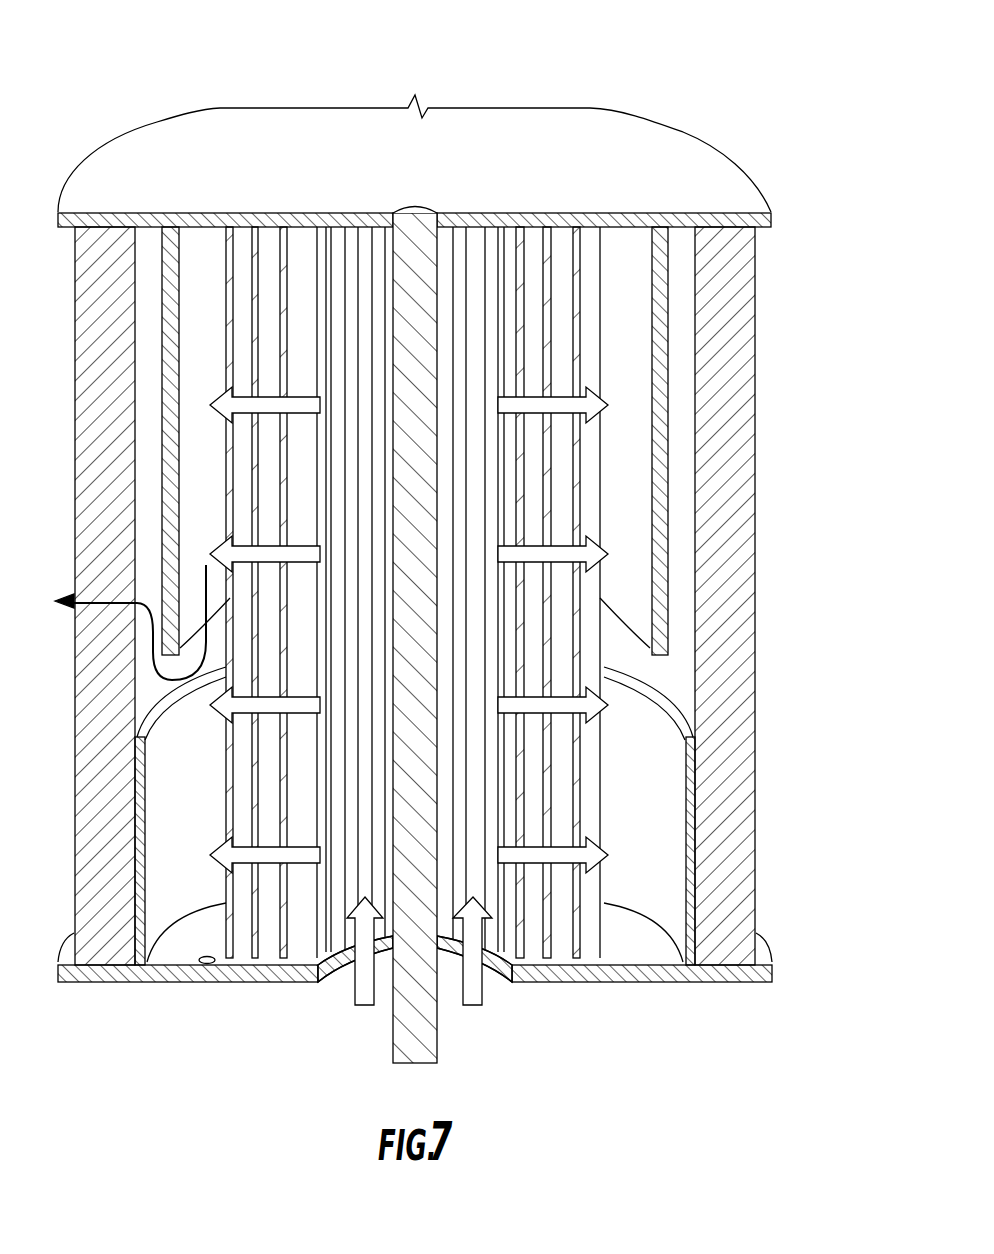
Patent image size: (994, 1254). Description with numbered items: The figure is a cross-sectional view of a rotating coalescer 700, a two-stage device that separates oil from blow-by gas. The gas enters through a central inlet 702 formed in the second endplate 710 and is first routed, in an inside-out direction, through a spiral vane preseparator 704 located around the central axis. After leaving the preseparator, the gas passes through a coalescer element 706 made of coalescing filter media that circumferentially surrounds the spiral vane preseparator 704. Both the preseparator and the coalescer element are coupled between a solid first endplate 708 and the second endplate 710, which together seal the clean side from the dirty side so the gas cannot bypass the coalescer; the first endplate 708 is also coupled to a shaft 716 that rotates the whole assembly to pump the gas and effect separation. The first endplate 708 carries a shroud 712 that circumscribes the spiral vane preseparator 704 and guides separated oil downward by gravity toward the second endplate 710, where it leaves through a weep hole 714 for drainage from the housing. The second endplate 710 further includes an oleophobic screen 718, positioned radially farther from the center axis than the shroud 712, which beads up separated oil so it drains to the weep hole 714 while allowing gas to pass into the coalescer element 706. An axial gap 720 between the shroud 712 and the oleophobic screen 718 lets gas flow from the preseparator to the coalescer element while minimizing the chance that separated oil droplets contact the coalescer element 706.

The rotating coalescer 700 is at (133, 53).
The central inlet 702 is at (477, 988).
The spiral vane preseparator 704 is at (593, 305).
The coalescer element 706 is at (415, 596).
The first endplate 708 is at (648, 155).
The second endplate 710 is at (635, 960).
The shroud 712 is at (638, 370).
The weep hole 714 is at (216, 963).
The shaft 716 is at (427, 1033).
The oleophobic screen 718 is at (667, 797).
The axial gap 720 is at (675, 668).